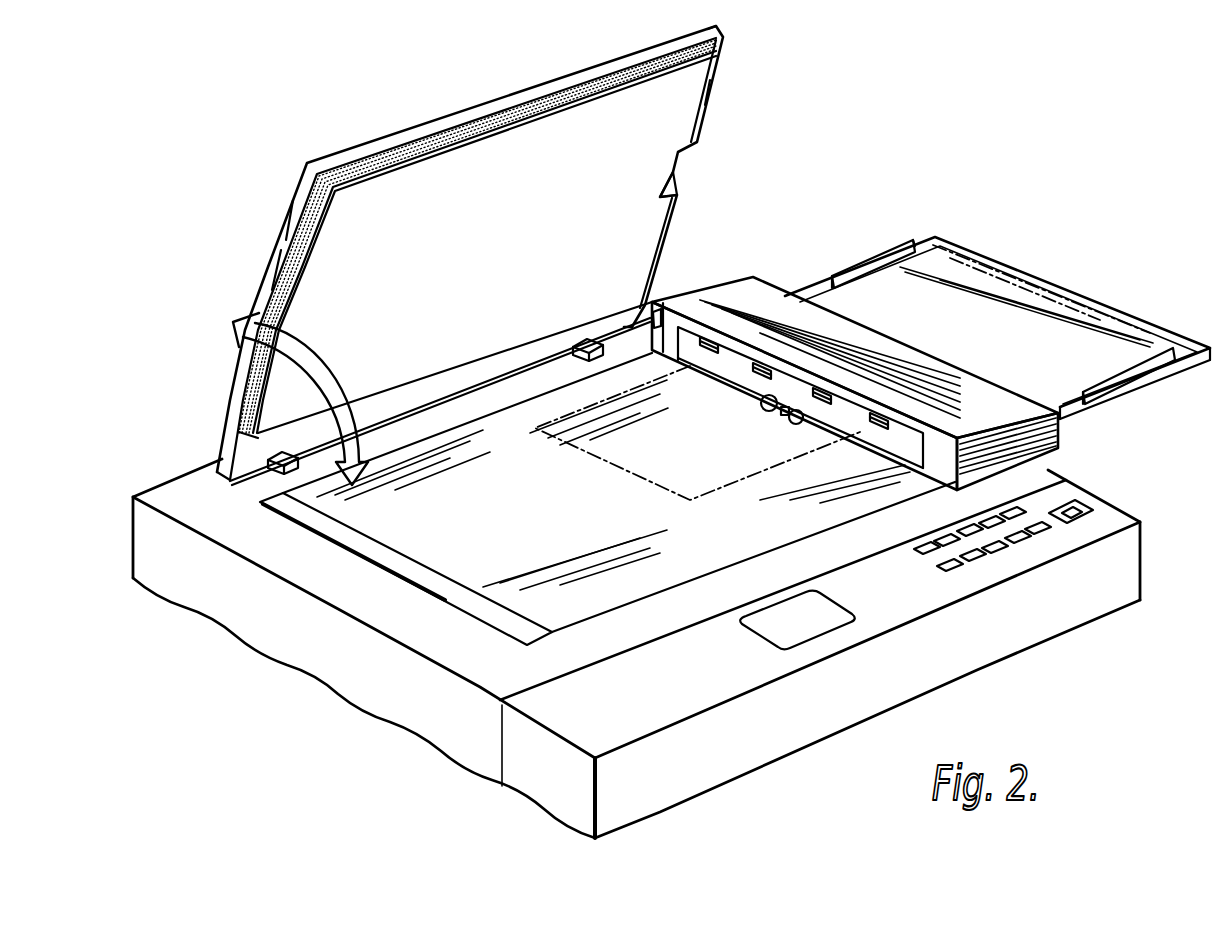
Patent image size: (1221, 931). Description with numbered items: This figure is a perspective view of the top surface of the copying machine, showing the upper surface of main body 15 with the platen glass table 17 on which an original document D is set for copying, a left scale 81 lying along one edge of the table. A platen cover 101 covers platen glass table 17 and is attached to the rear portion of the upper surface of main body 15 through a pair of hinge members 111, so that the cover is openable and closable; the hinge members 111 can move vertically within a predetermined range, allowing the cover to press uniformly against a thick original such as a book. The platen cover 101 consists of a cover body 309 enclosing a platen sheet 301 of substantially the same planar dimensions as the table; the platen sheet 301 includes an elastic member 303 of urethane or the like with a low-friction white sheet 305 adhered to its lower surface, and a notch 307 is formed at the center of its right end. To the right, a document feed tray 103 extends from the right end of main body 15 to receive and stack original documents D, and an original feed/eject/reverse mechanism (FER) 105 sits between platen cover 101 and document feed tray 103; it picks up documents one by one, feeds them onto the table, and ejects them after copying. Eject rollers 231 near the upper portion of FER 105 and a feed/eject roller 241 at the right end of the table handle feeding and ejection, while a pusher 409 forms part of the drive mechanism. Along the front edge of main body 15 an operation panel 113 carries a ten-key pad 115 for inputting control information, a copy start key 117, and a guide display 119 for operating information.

The main body 15 is at (1150, 575).
The platen glass table 17 is at (657, 578).
The left scale 81 is at (403, 570).
The original document D is at (597, 490).
The platen cover 101 is at (527, 93).
The cover body 309 is at (722, 34).
The platen sheet 301 is at (683, 110).
The notch 307 is at (680, 172).
The elastic member 303 is at (313, 222).
The white sheet 305 is at (302, 272).
The hinge members 111 is at (272, 468).
The original feed/eject/reverse mechanism (FER) 105 is at (877, 348).
The pusher 409 is at (657, 318).
The eject roller 231 is at (753, 368).
The feed/eject roller 241 is at (793, 418).
The document feed tray 103 is at (1135, 393).
The operation panel 113 is at (1019, 575).
The ten-key pad 115 is at (1018, 543).
The copy start key 117 is at (1080, 518).
The guide display 119 is at (820, 620).